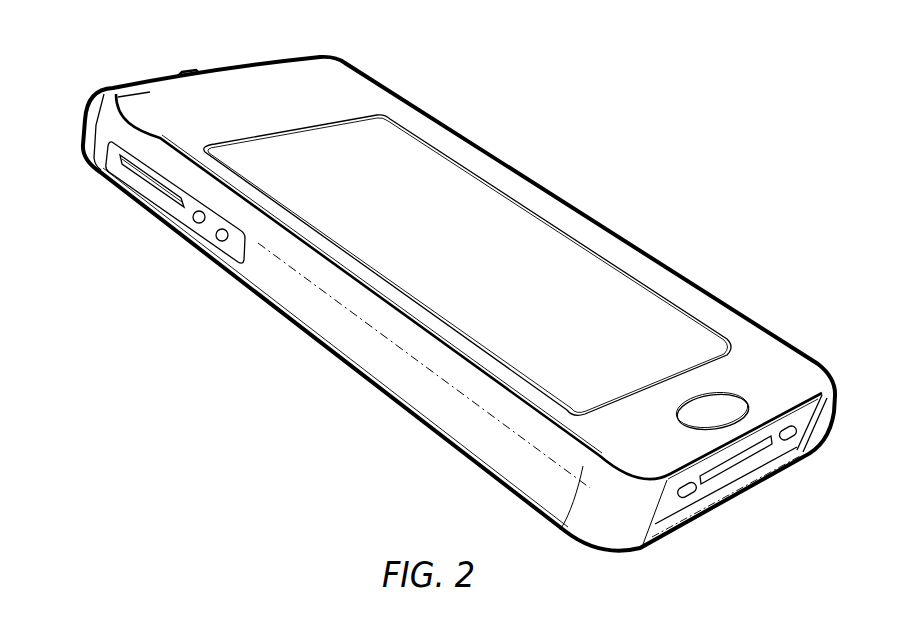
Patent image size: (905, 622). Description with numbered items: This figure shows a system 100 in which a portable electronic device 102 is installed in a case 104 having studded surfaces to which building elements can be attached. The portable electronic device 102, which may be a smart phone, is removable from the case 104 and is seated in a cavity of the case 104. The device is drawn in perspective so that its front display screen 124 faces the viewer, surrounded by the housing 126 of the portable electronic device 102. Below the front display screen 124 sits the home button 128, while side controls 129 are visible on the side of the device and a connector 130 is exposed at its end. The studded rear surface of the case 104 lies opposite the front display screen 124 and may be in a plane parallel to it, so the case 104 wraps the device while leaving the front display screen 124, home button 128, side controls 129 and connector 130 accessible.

The system 100 is at (96, 76).
The portable electronic device 102 is at (274, 108).
The case 104 is at (437, 393).
The front display screen 124 is at (479, 252).
The housing 126 is at (668, 278).
The home button 128 is at (730, 404).
The side controls 129 is at (168, 195).
The connector 130 is at (731, 466).